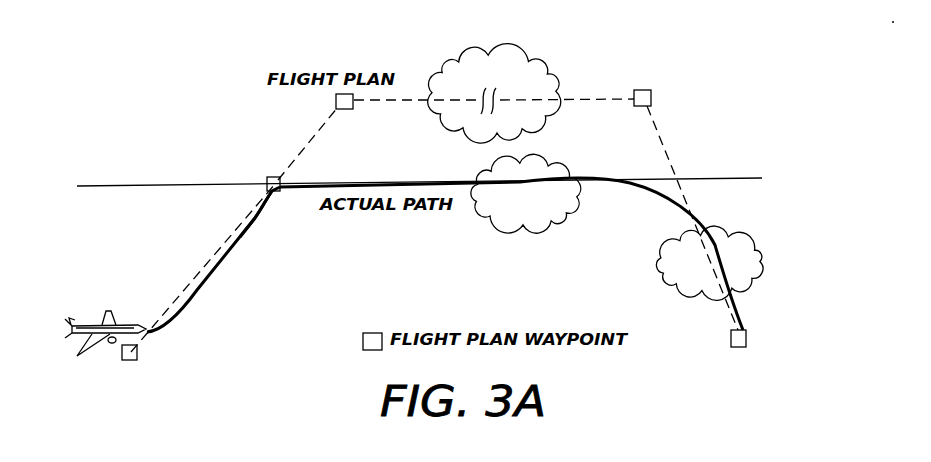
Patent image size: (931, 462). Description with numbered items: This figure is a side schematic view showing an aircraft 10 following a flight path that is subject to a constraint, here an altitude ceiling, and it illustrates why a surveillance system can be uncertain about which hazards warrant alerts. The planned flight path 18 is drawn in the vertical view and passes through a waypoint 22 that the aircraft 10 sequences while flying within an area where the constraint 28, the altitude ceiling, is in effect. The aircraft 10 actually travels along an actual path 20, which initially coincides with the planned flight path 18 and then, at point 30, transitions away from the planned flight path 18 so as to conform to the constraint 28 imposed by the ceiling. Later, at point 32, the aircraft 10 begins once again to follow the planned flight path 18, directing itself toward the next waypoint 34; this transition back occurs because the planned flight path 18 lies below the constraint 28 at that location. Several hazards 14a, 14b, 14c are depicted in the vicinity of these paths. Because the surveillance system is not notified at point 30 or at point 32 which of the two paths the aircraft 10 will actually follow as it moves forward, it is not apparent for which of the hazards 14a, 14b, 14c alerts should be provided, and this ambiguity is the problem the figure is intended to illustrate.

The aircraft 10 is at (91, 324).
The hazard 14a is at (535, 63).
The hazard 14b is at (498, 224).
The hazard 14c is at (749, 240).
The planned flight path 18 is at (204, 266).
The actual path 20 is at (202, 287).
The waypoint 22 is at (268, 178).
The constraint 28 is at (130, 187).
The point 30 is at (261, 202).
The point 32 is at (661, 194).
The waypoint 34 is at (747, 340).